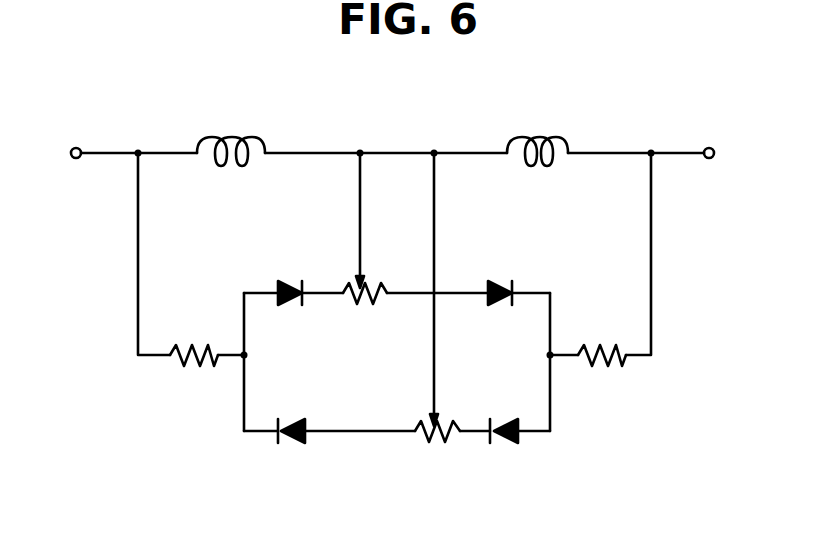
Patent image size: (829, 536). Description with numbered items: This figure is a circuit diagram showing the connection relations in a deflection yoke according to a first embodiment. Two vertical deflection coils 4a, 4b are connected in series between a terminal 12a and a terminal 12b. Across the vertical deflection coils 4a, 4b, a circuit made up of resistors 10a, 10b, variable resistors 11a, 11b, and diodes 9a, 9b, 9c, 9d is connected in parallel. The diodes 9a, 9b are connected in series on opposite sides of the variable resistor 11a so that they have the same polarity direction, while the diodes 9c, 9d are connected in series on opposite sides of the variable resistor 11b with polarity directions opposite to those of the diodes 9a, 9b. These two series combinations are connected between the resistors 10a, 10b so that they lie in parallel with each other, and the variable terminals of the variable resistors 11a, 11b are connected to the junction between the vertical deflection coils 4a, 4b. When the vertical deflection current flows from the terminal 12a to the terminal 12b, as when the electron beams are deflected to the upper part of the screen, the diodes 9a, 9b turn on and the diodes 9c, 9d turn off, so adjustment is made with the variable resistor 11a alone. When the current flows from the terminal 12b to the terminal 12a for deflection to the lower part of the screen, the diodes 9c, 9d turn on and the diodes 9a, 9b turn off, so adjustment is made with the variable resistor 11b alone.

The terminal 12a is at (77, 147).
The terminal 12b is at (708, 147).
The vertical deflection coil 4a is at (224, 140).
The vertical deflection coil 4b is at (532, 140).
The resistor 10a is at (190, 343).
The resistor 10b is at (600, 343).
The diode 9a is at (289, 280).
The diode 9b is at (499, 280).
The diode 9c is at (291, 445).
The diode 9d is at (506, 445).
The variable resistor 11a is at (362, 306).
The variable resistor 11b is at (435, 445).